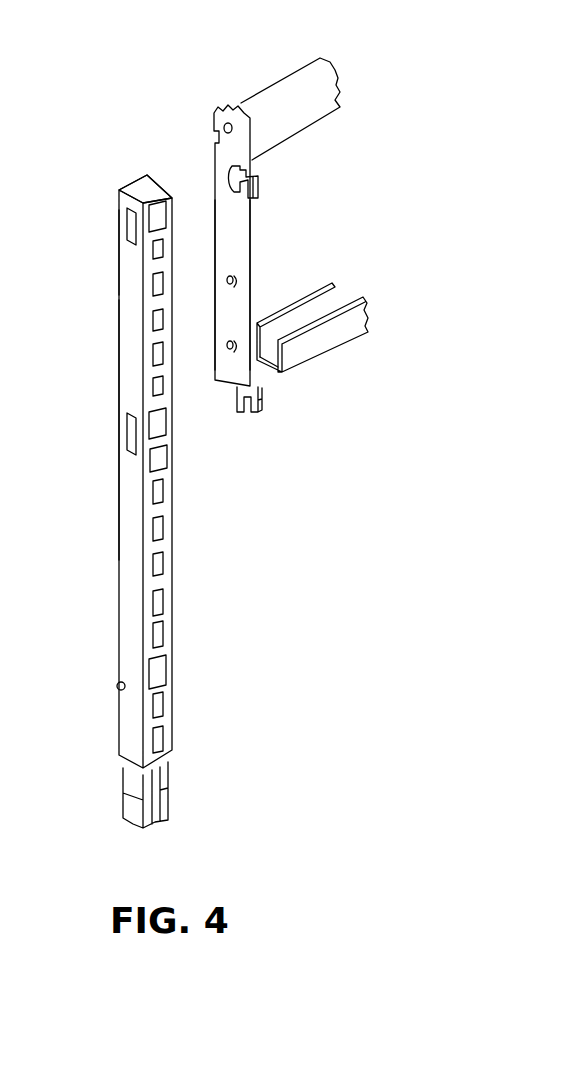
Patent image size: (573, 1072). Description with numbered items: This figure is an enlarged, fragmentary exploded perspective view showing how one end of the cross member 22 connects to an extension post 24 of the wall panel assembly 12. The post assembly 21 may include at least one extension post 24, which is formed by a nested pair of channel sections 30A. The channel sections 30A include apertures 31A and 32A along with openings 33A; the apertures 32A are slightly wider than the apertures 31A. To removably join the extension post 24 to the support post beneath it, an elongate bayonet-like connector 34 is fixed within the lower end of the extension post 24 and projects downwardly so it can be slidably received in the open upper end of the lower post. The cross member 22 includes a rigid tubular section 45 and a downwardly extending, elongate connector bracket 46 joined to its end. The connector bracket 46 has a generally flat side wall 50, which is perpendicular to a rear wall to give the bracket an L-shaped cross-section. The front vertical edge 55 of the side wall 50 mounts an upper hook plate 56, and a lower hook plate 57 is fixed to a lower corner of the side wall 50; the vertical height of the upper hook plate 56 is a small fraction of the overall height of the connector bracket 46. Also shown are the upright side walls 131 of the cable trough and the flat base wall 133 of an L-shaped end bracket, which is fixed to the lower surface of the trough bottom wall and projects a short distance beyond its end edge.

The wall panel assembly 12 is at (208, 312).
The post assembly 21 is at (112, 750).
The cross member 22 is at (254, 74).
The extension post 24 is at (116, 563).
The channel sections 30A is at (157, 182).
The apertures 31A is at (155, 327).
The apertures 32A is at (155, 203).
The openings 33A is at (132, 222).
The bayonet-like connector 34 is at (168, 800).
The rigid tubular section 45 is at (302, 72).
The connector bracket 46 is at (209, 170).
The side wall 50 is at (236, 246).
The front vertical edge 55 is at (252, 268).
The upper hook plate 56 is at (266, 185).
The lower hook plate 57 is at (271, 418).
The upright side walls 131 is at (324, 300).
The base wall 133 is at (262, 380).